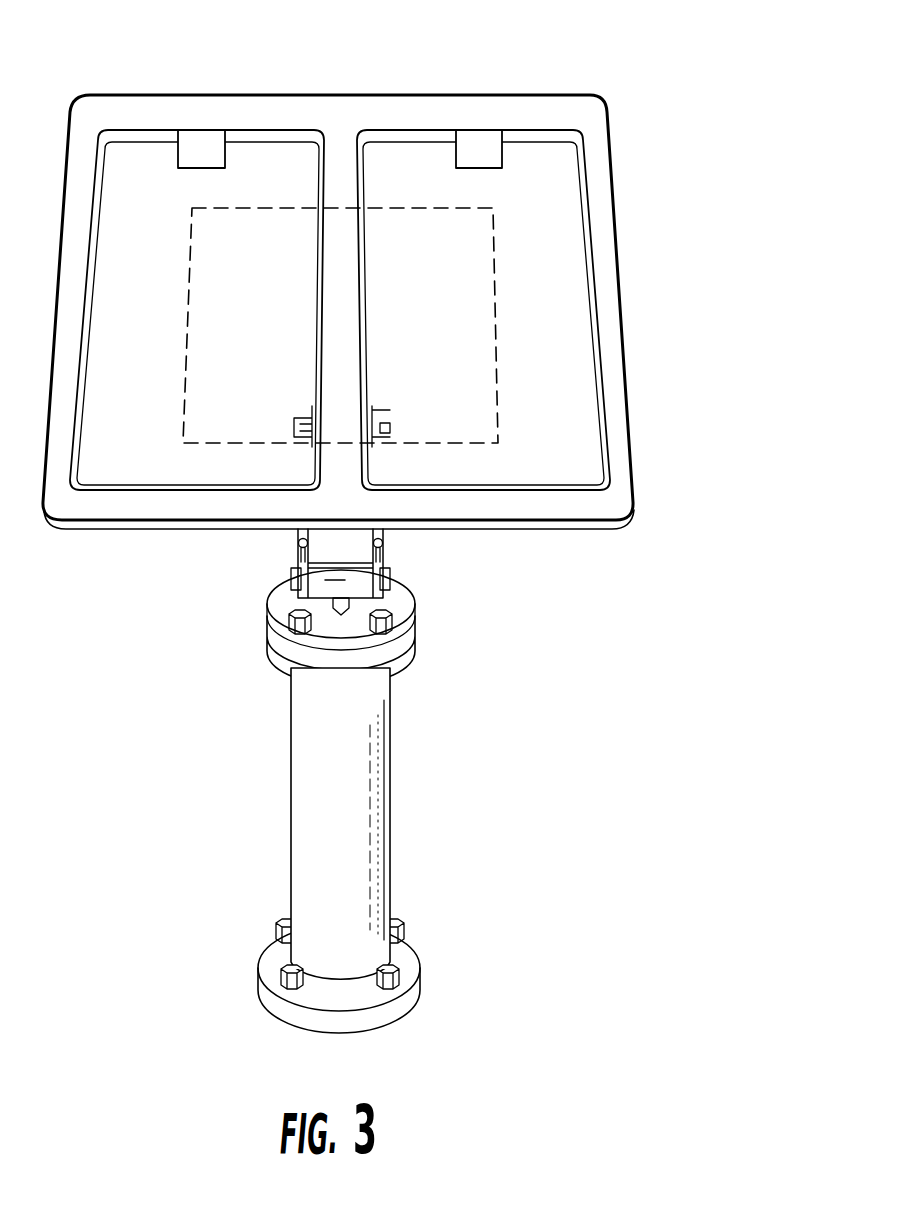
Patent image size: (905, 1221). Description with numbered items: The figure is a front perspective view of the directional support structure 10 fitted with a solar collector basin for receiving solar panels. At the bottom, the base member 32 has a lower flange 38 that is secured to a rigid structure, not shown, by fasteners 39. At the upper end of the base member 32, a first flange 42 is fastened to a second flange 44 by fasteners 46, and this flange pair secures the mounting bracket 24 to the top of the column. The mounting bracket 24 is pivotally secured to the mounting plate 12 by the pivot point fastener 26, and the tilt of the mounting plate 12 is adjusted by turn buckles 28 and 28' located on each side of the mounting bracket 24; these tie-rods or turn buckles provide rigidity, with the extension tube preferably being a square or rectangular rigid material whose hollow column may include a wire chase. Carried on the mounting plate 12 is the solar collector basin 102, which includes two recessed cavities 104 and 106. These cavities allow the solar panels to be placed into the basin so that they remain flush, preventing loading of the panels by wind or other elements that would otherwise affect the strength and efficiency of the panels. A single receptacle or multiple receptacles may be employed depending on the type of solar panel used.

The directional support structure 10 is at (412, 799).
The mounting plate 12 is at (500, 402).
The mounting bracket 24 is at (365, 553).
The pivot point fastener 26 is at (388, 432).
The turn buckle 28 is at (240, 562).
The turn buckle 28' is at (512, 559).
The base member 32 is at (290, 852).
The lower flange 38 is at (267, 998).
The fasteners 39 is at (368, 828).
The first flange 42 is at (417, 624).
The second flange 44 is at (413, 653).
The fasteners 46 is at (312, 650).
The solar collector basin 102 is at (620, 257).
The recessed cavity 104 is at (560, 190).
The recessed cavity 106 is at (262, 173).